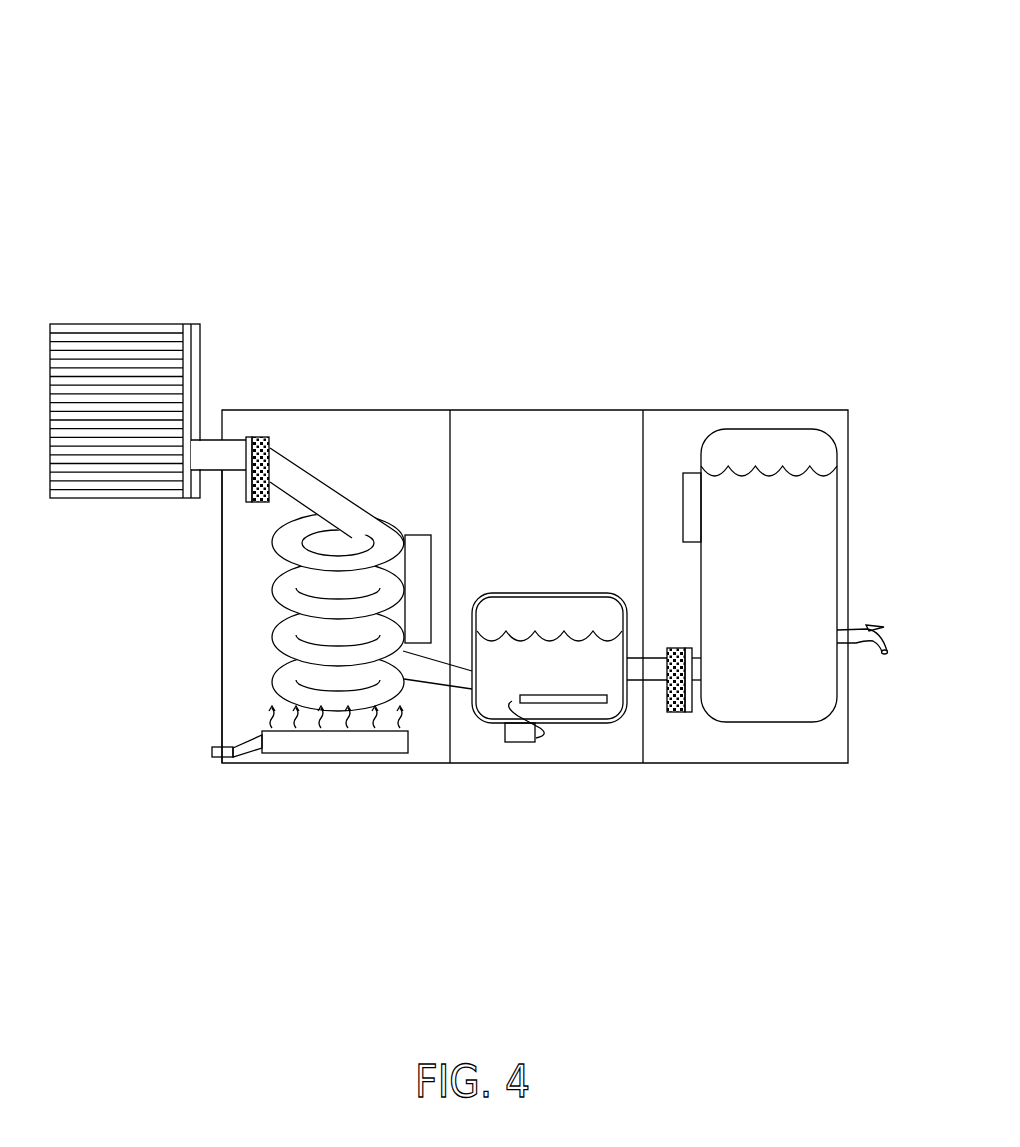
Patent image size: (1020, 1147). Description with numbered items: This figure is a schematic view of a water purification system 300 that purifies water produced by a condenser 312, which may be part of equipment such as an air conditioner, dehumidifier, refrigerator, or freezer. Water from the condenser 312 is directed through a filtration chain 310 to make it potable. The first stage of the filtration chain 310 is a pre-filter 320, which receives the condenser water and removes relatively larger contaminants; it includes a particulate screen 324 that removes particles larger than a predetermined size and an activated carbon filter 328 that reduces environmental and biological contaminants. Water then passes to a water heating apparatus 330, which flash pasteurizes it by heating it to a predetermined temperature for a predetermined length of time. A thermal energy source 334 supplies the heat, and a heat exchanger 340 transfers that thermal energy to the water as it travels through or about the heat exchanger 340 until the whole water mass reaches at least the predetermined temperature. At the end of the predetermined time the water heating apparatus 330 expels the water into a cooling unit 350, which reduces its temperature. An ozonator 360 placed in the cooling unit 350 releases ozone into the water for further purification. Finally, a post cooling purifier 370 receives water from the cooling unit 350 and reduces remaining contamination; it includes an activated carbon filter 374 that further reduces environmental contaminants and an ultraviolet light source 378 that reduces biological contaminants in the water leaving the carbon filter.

The water purification system 300 is at (245, 92).
The filtration chain 310 is at (235, 335).
The condenser 312 is at (113, 323).
The pre-filter 320 is at (263, 503).
The particulate screen 324 is at (246, 503).
The activated carbon filter 328 is at (258, 437).
The water heating apparatus 330 is at (222, 702).
The thermal energy source 334 is at (302, 755).
The heat exchanger 340 is at (271, 625).
The cooling unit 350 is at (478, 763).
The ozonator 360 is at (573, 703).
The post cooling purifier 370 is at (777, 763).
The activated carbon filter 374 is at (668, 712).
The ultraviolet light source 378 is at (683, 498).